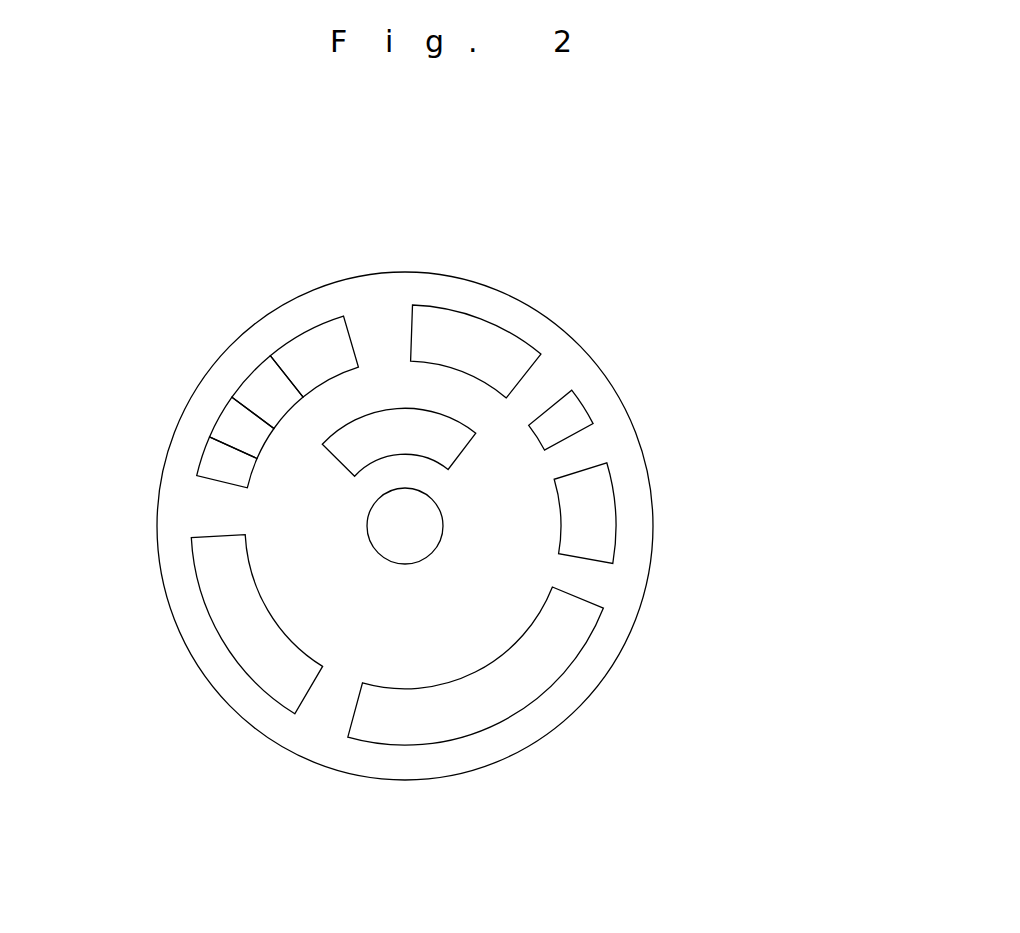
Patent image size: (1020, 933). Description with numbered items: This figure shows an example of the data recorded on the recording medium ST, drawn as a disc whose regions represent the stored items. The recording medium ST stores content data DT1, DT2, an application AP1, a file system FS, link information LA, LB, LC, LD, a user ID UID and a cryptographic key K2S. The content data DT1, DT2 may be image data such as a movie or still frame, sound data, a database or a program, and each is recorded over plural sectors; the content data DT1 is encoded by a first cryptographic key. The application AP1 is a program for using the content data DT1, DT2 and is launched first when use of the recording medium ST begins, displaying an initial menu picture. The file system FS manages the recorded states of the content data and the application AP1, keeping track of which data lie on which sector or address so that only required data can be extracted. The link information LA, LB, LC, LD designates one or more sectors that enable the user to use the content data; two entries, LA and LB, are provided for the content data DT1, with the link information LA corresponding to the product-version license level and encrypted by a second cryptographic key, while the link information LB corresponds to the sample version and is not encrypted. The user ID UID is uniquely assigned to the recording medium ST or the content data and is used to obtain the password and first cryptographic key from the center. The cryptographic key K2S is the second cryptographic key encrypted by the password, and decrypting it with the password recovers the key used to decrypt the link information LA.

The recording medium ST is at (495, 214).
The file system FS is at (393, 410).
The application AP1 is at (445, 310).
The link information LA is at (295, 338).
The link information LB is at (250, 378).
The link information LC is at (217, 417).
The link information LD is at (207, 455).
The user ID UID is at (583, 405).
The cryptographic key K2S is at (612, 478).
The content data DT1 is at (590, 622).
The content data DT2 is at (254, 677).